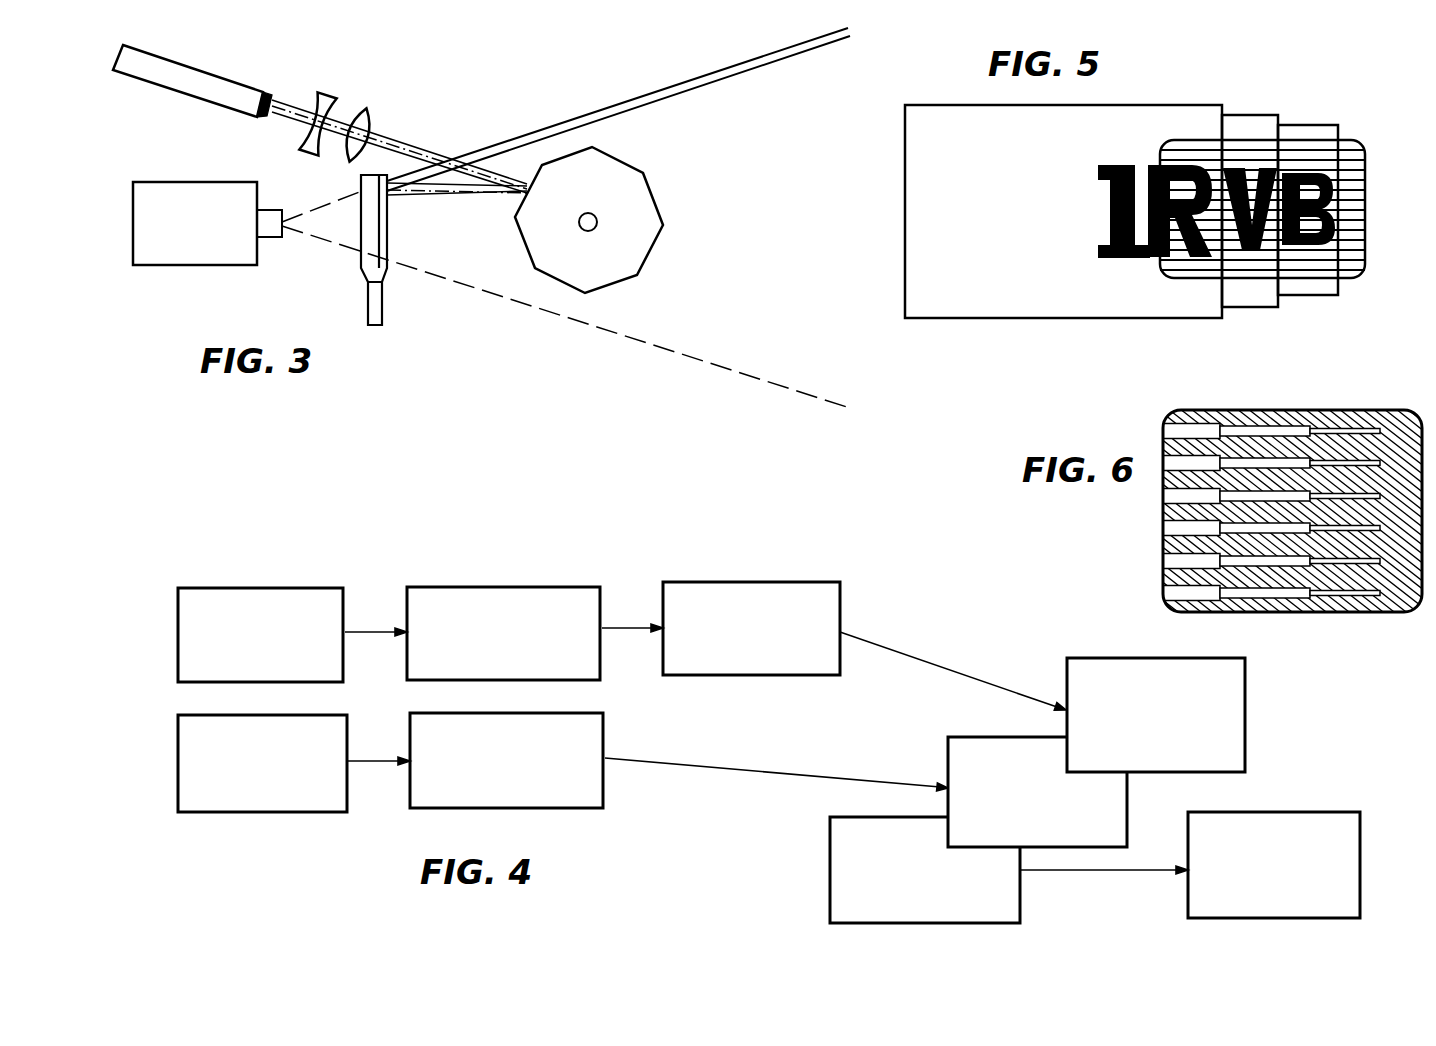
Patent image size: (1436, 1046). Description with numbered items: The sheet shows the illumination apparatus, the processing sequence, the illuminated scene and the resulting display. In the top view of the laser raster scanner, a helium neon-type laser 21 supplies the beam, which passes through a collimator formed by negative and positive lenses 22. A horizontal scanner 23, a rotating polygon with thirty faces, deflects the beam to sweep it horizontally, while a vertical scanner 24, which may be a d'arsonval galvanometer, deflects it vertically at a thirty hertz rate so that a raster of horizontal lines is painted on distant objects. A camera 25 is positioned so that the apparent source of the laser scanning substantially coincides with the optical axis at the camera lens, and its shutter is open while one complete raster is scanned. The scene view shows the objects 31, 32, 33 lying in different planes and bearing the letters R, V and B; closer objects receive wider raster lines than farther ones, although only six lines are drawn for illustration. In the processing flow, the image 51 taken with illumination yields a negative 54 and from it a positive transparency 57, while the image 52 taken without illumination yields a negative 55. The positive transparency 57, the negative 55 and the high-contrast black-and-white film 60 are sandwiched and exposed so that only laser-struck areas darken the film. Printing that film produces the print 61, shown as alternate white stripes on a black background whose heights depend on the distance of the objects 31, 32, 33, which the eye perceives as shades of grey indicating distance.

In FIG. 3, the helium neon-type laser 21 is at (243, 84).
In FIG. 3, the negative and positive lenses 22 is at (343, 112).
In FIG. 3, the horizontal scanner 23 is at (633, 171).
In FIG. 3, the vertical scanner 24 is at (387, 268).
In FIG. 3, the camera 25 is at (163, 182).
In FIG. 5, the object 31 is at (1195, 105).
In FIG. 5, the object 32 is at (1262, 115).
In FIG. 5, the object 33 is at (1320, 125).
In FIG. 4, the image with illumination 51 is at (267, 588).
In FIG. 4, the image without illumination 52 is at (222, 812).
In FIG. 4, the negative 54 is at (515, 587).
In FIG. 4, the negative 55 is at (578, 808).
In FIG. 4, the positive transparency 57 is at (752, 582).
In FIG. 4, the high-contrast black-and-white film 60 is at (830, 822).
In FIG. 4, the print 61 is at (1360, 818).
In FIG. 6, the print 61 is at (1378, 410).